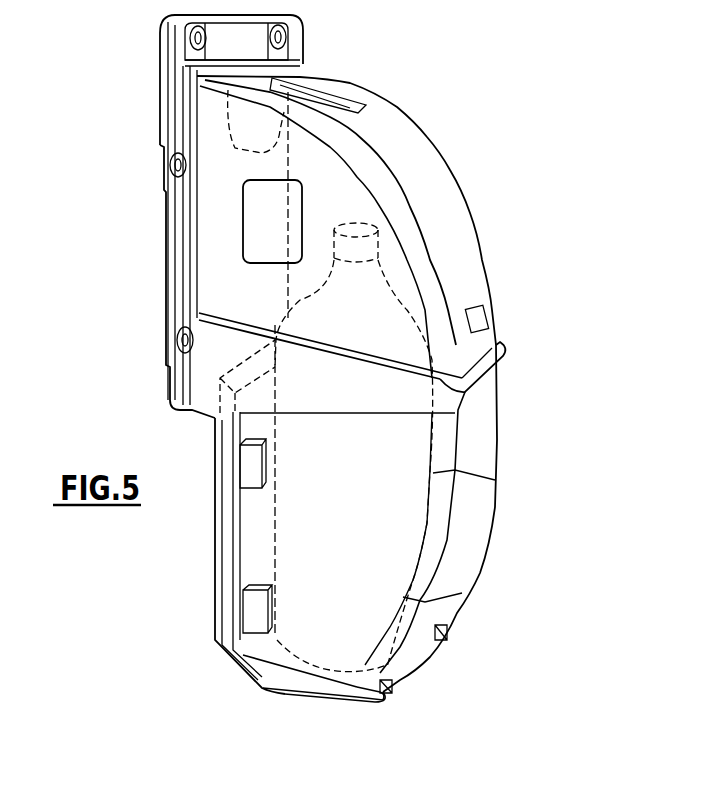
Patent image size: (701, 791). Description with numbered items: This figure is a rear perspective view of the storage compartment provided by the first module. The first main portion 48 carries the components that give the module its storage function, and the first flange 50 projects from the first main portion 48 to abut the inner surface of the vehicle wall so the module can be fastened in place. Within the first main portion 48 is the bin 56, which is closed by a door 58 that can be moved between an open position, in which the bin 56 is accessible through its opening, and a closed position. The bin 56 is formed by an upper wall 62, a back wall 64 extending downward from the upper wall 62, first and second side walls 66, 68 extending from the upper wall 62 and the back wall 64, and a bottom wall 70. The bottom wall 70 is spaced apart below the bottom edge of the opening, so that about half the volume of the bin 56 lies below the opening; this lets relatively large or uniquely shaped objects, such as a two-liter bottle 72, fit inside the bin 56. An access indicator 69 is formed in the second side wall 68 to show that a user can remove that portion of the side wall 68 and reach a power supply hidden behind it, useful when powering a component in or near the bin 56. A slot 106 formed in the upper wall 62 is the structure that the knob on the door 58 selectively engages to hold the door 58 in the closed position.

The first main portion 48 is at (415, 105).
The first flange 50 is at (163, 95).
The bin 56 is at (343, 205).
The door 58 is at (160, 232).
The upper wall 62 is at (353, 90).
The back wall 64 is at (467, 277).
The first side wall 66 is at (497, 401).
The second side wall 68 is at (260, 523).
The access indicator 69 is at (257, 242).
The bottom wall 70 is at (323, 693).
The 2-liter bottle 72 is at (393, 463).
The slot 106 is at (300, 72).